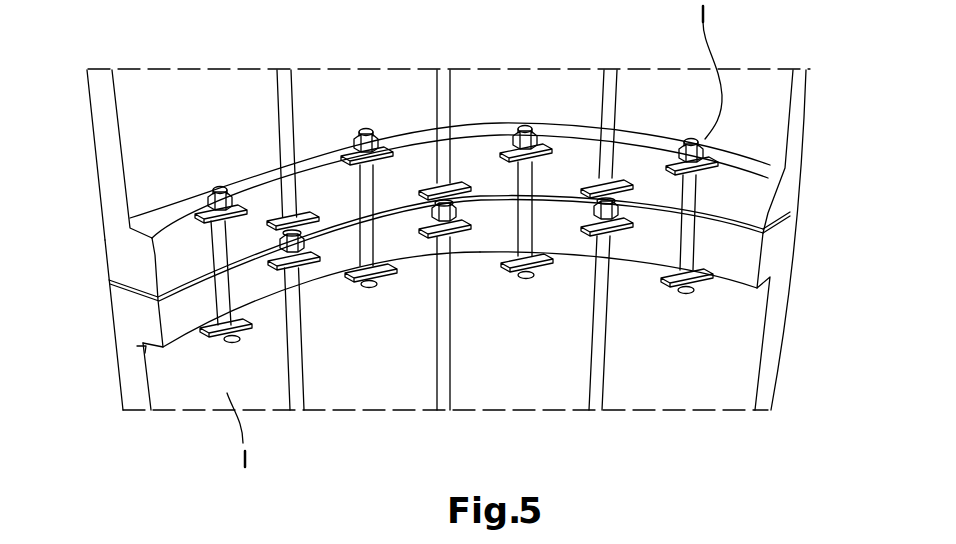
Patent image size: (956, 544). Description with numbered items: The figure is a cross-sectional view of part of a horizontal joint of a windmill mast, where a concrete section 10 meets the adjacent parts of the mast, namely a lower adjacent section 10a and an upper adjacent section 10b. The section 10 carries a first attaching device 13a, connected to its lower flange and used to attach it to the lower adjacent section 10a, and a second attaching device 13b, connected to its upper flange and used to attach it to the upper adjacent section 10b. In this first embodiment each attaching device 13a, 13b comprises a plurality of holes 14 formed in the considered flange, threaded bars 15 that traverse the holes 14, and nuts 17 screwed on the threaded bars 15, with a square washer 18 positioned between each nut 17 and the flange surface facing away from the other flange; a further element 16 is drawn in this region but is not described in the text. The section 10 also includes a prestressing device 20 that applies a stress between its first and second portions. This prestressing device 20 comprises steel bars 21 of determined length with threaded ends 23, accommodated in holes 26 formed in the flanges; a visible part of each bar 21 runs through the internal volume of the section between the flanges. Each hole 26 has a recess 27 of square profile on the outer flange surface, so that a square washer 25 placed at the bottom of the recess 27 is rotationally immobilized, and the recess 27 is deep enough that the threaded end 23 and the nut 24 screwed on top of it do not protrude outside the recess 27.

The section 10 is at (770, 110).
The lower adjacent section 10a is at (158, 381).
The upper adjacent section 10b is at (155, 132).
The first attaching device 13a is at (702, 246).
The second attaching device 13b is at (321, 299).
The holes 14 is at (703, 200).
The threaded bars 15 is at (203, 318).
The nut assembly 16 is at (705, 140).
The nuts 17 is at (130, 228).
The square washer 18 is at (140, 347).
The prestressing device 20 is at (275, 103).
The steel bars 21 is at (600, 357).
The threaded ends 23 is at (633, 223).
The nut 24 is at (563, 206).
The square washer 25 is at (607, 218).
The holes 26 is at (296, 190).
The recess 27 is at (267, 245).